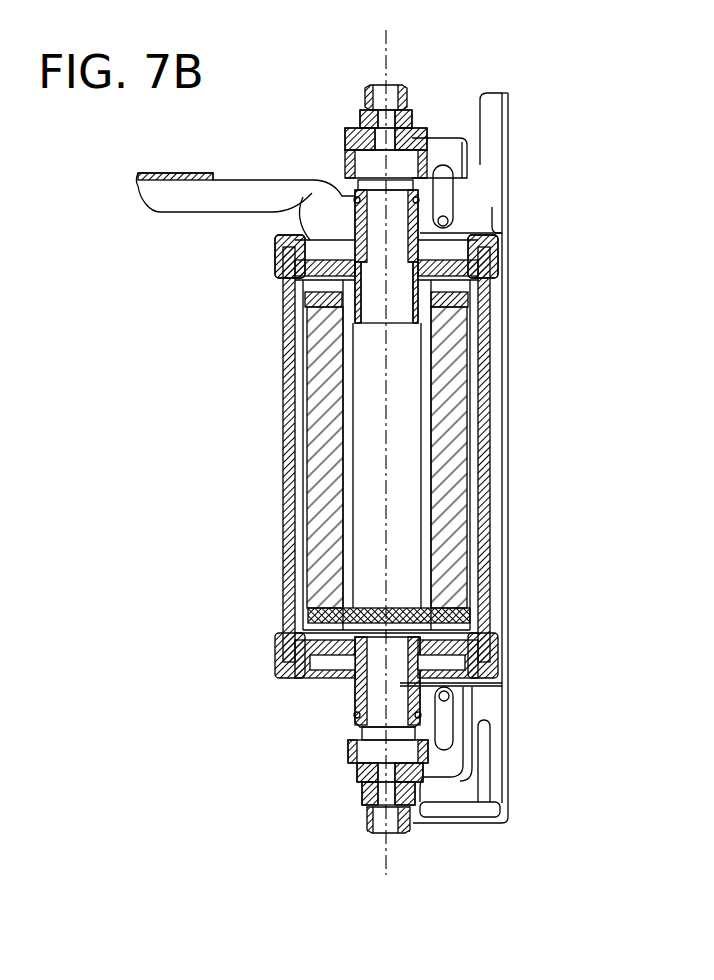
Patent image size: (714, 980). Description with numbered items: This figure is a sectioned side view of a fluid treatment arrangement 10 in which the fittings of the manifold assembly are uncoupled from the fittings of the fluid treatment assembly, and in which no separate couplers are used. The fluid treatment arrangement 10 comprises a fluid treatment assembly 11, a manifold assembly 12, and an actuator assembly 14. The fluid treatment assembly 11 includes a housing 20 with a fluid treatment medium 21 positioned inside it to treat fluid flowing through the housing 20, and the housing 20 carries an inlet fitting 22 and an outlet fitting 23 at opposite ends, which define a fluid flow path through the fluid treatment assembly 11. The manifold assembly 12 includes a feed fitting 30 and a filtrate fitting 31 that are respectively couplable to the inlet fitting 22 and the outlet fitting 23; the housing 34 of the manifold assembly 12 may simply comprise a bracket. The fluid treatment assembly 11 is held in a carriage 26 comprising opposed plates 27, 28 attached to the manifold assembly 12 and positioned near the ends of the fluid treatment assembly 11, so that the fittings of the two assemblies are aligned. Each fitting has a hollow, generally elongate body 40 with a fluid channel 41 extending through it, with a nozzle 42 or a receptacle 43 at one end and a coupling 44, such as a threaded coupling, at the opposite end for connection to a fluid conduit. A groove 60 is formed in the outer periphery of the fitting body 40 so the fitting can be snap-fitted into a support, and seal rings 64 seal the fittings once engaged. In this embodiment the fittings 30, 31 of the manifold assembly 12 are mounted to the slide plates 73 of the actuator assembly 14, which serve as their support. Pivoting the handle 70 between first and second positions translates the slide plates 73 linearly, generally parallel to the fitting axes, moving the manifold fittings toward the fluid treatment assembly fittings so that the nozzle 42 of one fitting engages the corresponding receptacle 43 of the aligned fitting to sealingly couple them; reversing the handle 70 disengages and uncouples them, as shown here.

The fluid treatment arrangement 10 is at (232, 368).
The fluid treatment assembly 11 is at (492, 348).
The manifold assembly 12 is at (505, 94).
The actuator assembly 14 is at (197, 205).
The housing 20 is at (283, 406).
The fluid treatment medium 21 is at (318, 455).
The inlet fitting 22 is at (355, 690).
The outlet fitting 23 is at (358, 212).
The carriage 26 is at (483, 255).
The plate 27 is at (508, 205).
The plate 28 is at (480, 797).
The feed fitting 30 is at (348, 766).
The filtrate fitting 31 is at (405, 127).
The housing 34 is at (505, 150).
The body 40 is at (360, 120).
The fluid channel 41 is at (392, 100).
The nozzle 42 is at (453, 180).
The receptacle 43 is at (355, 172).
The coupling 44 is at (364, 97).
The groove 60 is at (345, 140).
The seal ring 64 is at (355, 200).
The handle 70 is at (192, 185).
The slide plate 73 is at (452, 137).